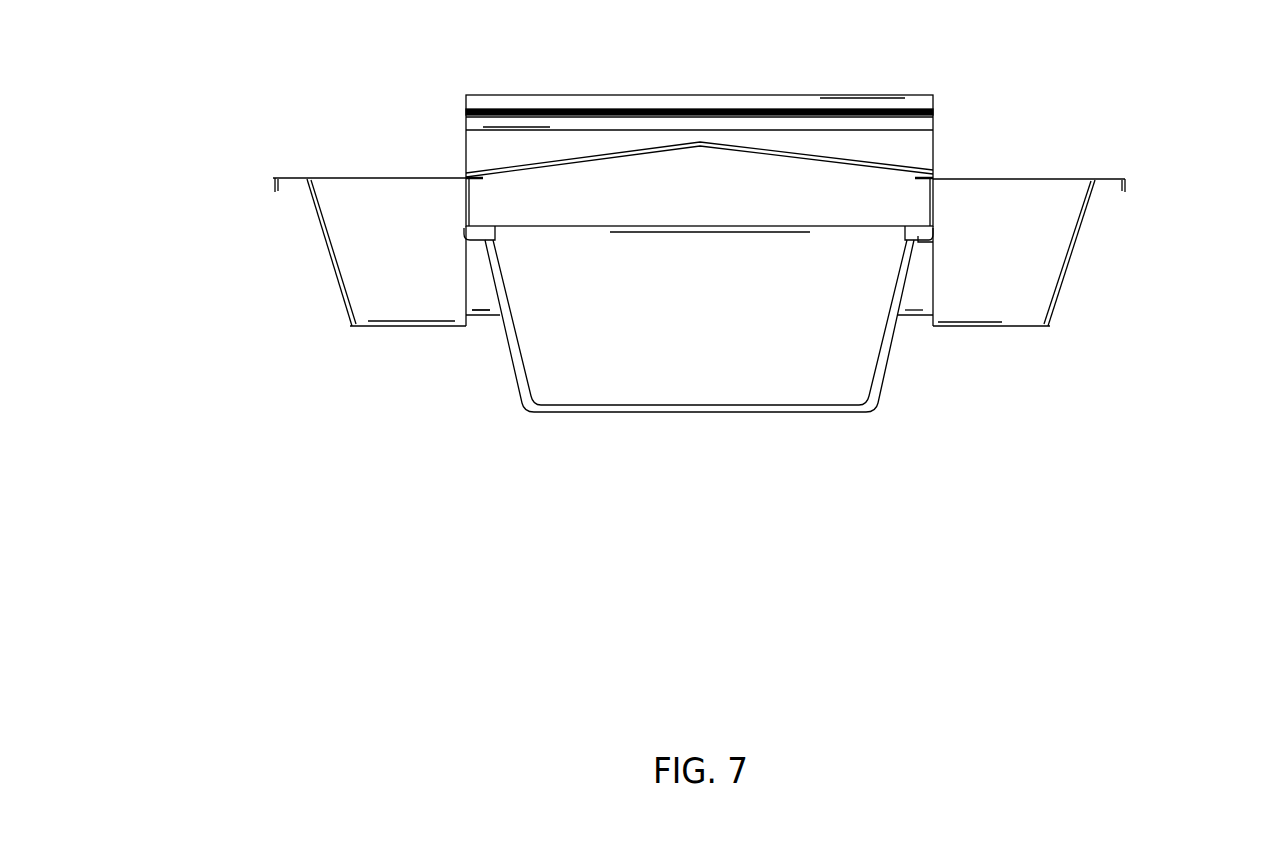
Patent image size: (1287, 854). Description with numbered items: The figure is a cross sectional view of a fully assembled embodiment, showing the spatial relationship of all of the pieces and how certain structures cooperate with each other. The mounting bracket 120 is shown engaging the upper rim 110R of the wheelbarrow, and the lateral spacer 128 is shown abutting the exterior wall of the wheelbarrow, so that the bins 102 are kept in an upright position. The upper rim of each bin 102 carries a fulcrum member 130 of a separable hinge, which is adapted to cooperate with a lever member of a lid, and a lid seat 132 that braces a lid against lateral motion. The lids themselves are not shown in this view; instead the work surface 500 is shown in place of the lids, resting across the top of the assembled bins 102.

The work surface 500 is at (952, 85).
The fulcrum member 130 is at (930, 178).
The lid seat 132 is at (273, 178).
The bin 102 is at (1048, 240).
The upper rim 110R is at (475, 235).
The mounting bracket 120 is at (493, 240).
The lateral spacer 128 is at (492, 305).